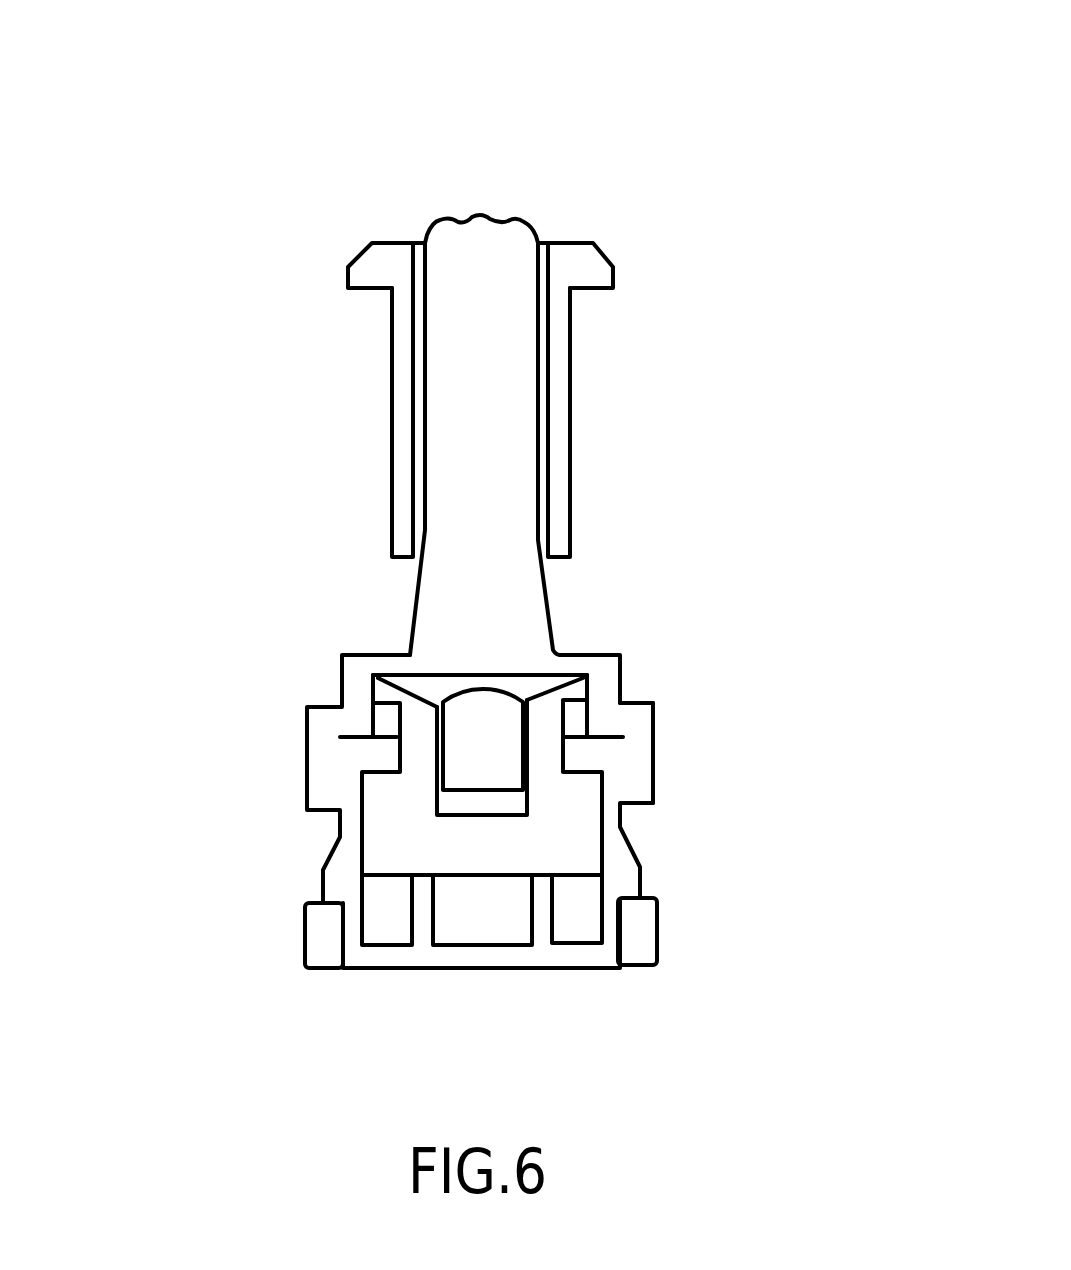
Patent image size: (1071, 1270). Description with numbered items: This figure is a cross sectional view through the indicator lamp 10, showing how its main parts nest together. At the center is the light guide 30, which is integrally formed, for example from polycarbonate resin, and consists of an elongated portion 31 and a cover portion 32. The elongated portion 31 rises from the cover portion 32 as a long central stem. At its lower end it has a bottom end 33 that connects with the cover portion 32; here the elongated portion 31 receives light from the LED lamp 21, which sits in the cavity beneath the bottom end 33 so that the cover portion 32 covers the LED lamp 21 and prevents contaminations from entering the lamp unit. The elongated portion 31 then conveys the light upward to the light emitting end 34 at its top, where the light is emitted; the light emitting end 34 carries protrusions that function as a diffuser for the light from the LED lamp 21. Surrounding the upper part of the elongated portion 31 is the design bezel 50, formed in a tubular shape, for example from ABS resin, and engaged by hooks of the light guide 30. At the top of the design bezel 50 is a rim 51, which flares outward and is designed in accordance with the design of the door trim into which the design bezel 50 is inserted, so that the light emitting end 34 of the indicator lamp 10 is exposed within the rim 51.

The indicator lamp 10 is at (690, 260).
The LED lamp 21 is at (477, 733).
The light guide 30 is at (355, 593).
The elongated portion 31 is at (492, 425).
The cover portion 32 is at (638, 712).
The bottom end 33 is at (523, 688).
The light emitting end 34 is at (490, 216).
The design bezel 50 is at (403, 365).
The rim 51 is at (384, 243).